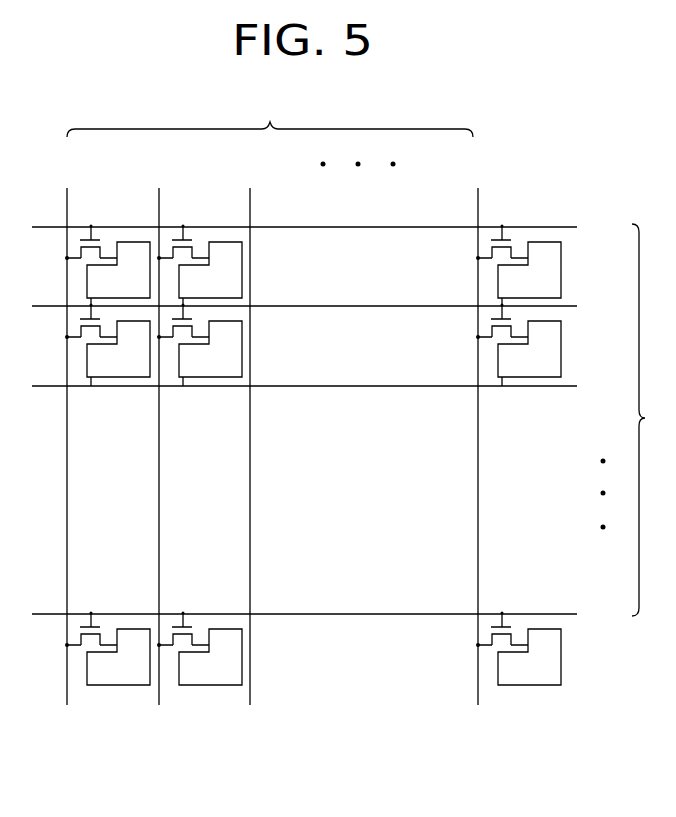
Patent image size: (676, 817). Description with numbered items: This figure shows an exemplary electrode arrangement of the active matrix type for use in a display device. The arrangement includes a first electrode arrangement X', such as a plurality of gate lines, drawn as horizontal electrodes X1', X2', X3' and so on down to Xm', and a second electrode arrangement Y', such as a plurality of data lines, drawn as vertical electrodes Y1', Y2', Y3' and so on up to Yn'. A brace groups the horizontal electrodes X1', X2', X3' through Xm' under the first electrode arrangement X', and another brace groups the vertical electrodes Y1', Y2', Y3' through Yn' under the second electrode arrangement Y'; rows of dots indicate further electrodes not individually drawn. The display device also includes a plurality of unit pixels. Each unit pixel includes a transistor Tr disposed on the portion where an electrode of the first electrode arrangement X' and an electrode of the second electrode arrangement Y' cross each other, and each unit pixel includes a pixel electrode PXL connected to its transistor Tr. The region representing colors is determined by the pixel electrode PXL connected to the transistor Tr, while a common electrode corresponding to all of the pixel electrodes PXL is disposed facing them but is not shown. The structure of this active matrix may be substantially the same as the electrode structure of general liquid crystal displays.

The transistor Tr is at (302, 407).
The pixel electrode PXL is at (324, 463).
The second electrode arrangement Y' is at (270, 114).
The first electrode arrangement X' is at (652, 420).
The electrode of the second electrode arrangement Y1' is at (68, 429).
The electrode of the second electrode arrangement Y2' is at (158, 429).
The electrode of the second electrode arrangement Y3' is at (249, 429).
The electrode of the second electrode arrangement Yn' is at (479, 429).
The electrode of the first electrode arrangement X1' is at (325, 226).
The electrode of the first electrode arrangement X2' is at (325, 305).
The electrode of the first electrode arrangement X3' is at (325, 385).
The electrode of the first electrode arrangement Xm' is at (329, 613).